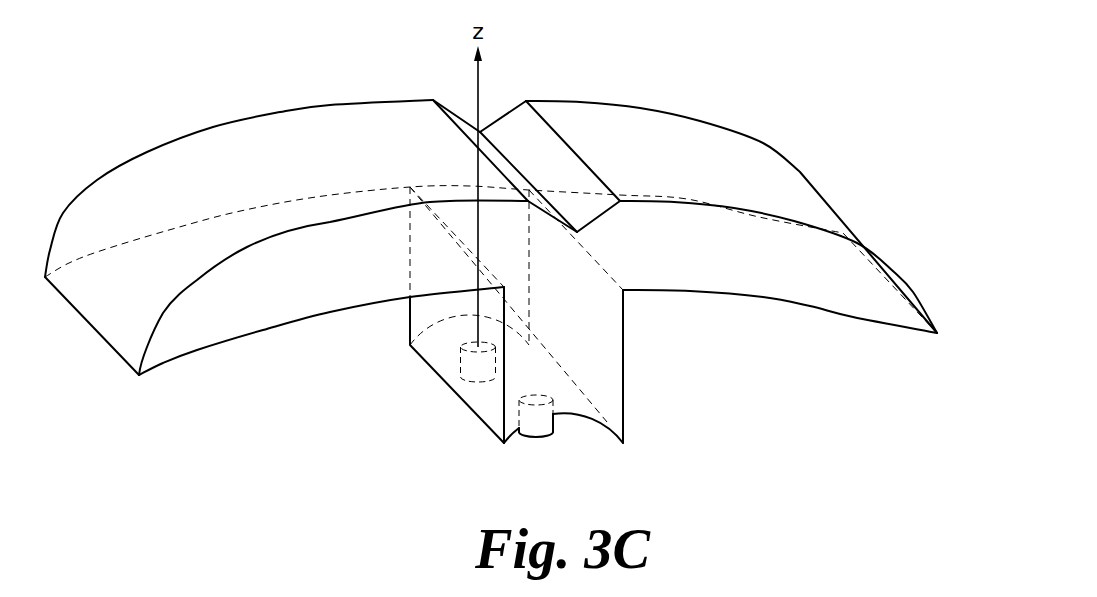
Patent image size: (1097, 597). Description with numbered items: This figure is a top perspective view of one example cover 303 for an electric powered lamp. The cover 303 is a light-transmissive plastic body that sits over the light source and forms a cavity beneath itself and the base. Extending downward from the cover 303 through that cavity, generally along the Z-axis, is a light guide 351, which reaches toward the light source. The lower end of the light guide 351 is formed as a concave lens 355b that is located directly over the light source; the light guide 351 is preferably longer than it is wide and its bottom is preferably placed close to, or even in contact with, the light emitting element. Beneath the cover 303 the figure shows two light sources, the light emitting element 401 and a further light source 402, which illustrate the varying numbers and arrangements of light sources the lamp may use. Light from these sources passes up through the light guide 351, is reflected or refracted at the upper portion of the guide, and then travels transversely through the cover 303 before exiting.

The cover 303 is at (739, 82).
The light guide 351 is at (600, 358).
The concave lens 355b is at (608, 425).
The light emitting element 401 is at (546, 433).
The light source 402 is at (483, 378).